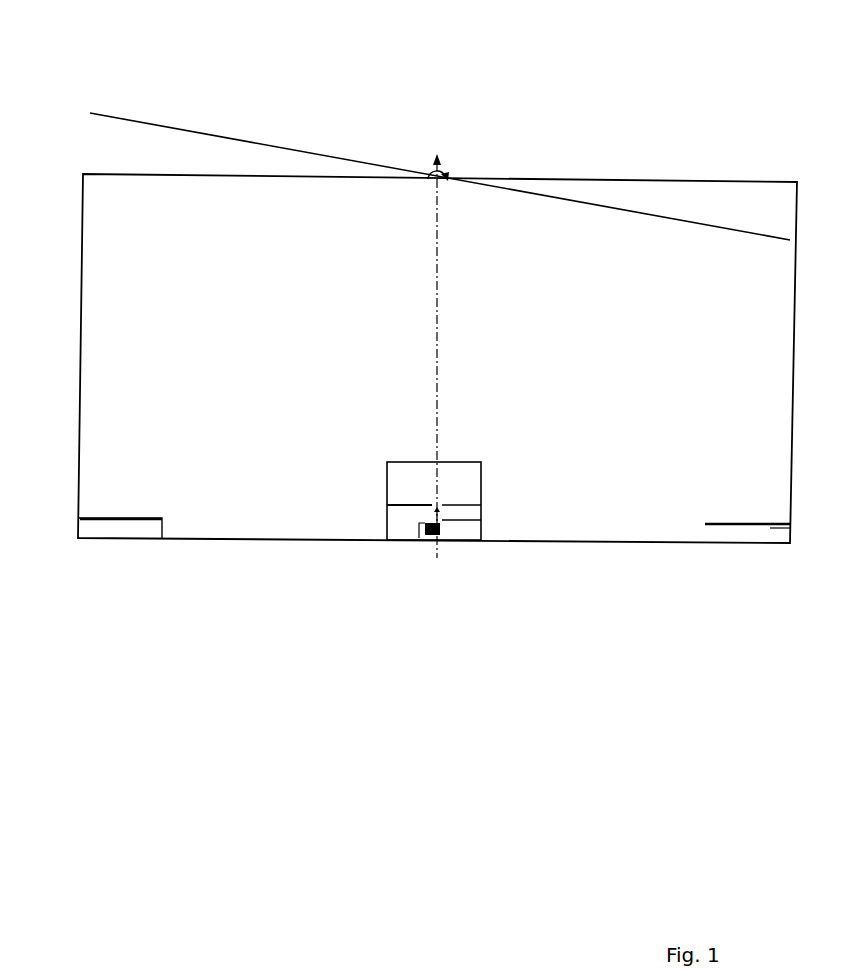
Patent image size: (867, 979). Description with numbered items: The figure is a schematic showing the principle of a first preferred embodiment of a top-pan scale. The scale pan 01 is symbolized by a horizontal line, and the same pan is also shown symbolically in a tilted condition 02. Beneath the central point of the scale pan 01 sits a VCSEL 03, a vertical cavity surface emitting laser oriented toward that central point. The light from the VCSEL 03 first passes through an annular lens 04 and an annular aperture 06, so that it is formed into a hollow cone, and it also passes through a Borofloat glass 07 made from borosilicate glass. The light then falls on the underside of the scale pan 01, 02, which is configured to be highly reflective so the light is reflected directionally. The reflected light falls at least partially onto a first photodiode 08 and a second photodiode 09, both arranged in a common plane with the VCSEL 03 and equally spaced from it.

The scale pan 01 is at (657, 181).
The tilted condition 02 is at (107, 113).
The VCSEL 03 is at (424, 536).
The annular lens 04 is at (440, 513).
The annular aperture 06 is at (412, 506).
The Borofloat glass 07 is at (467, 483).
The first photodiode 08 is at (115, 520).
The second photodiode 09 is at (768, 526).